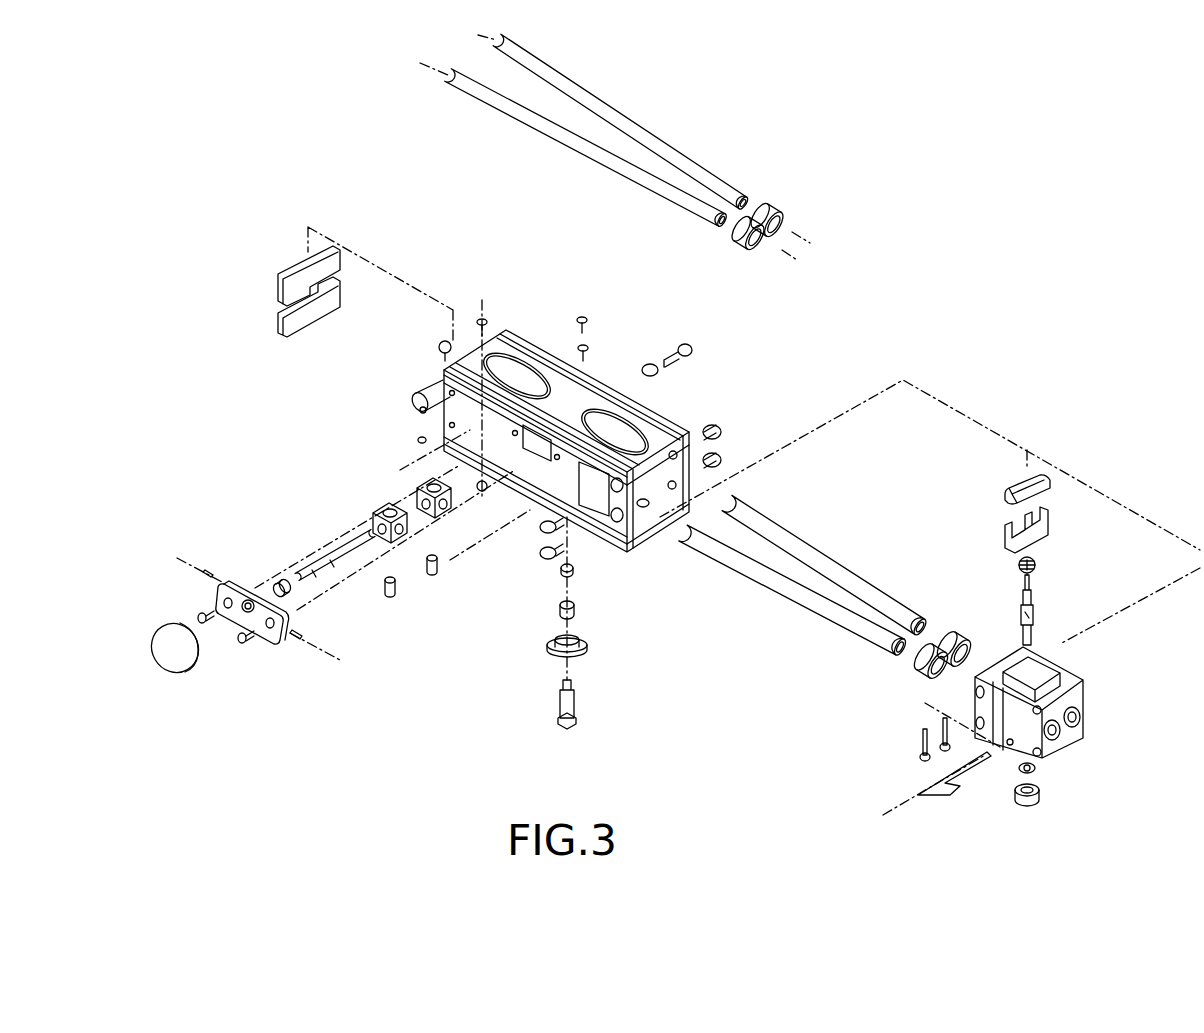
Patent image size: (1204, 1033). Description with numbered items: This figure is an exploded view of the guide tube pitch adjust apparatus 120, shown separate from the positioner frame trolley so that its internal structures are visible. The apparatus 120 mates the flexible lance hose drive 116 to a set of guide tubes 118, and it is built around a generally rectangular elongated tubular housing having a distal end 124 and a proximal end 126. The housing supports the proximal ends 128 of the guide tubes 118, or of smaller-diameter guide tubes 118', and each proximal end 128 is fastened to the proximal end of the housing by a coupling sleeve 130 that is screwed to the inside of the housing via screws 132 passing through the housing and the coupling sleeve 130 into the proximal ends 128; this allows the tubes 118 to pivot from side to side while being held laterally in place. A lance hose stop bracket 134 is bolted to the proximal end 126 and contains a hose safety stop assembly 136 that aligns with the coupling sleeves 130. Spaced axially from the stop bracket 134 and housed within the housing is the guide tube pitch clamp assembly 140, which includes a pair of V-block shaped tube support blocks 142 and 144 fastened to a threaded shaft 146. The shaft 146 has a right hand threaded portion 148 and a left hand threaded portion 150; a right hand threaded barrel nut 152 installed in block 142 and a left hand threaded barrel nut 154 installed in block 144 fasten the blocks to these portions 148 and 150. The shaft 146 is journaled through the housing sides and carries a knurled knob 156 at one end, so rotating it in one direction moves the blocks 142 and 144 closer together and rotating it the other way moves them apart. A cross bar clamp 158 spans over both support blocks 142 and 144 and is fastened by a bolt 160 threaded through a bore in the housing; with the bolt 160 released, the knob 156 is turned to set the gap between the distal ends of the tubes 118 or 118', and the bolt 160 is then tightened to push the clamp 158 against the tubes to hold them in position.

The flexible lance hose drive 116 is at (245, 645).
The guide tubes 118 is at (803, 564).
The guide tubes (smaller diameter) 118' is at (597, 129).
The guide tube pitch adjust apparatus 120 is at (842, 182).
The distal end 124 is at (510, 330).
The proximal end 126 is at (687, 510).
The proximal ends of the guide tubes 128 is at (723, 180).
The coupling sleeve 130 is at (906, 679).
The screws 132 is at (920, 752).
The lance hose stop bracket 134 is at (1085, 705).
The hose safety stop assembly 136 is at (1058, 470).
The guide tube pitch clamp assembly 140 is at (515, 668).
The tube support block 142 is at (400, 530).
The tube support block 144 is at (447, 512).
The threaded shaft 146 is at (297, 570).
The right hand threaded portion 148 is at (337, 567).
The left hand threaded portion 150 is at (337, 542).
The right hand threaded barrel nut 152 is at (392, 597).
The left hand threaded barrel nut 154 is at (433, 577).
The knurled knob 156 is at (172, 660).
The cross bar clamp 158 is at (413, 395).
The bolt 160 is at (580, 700).